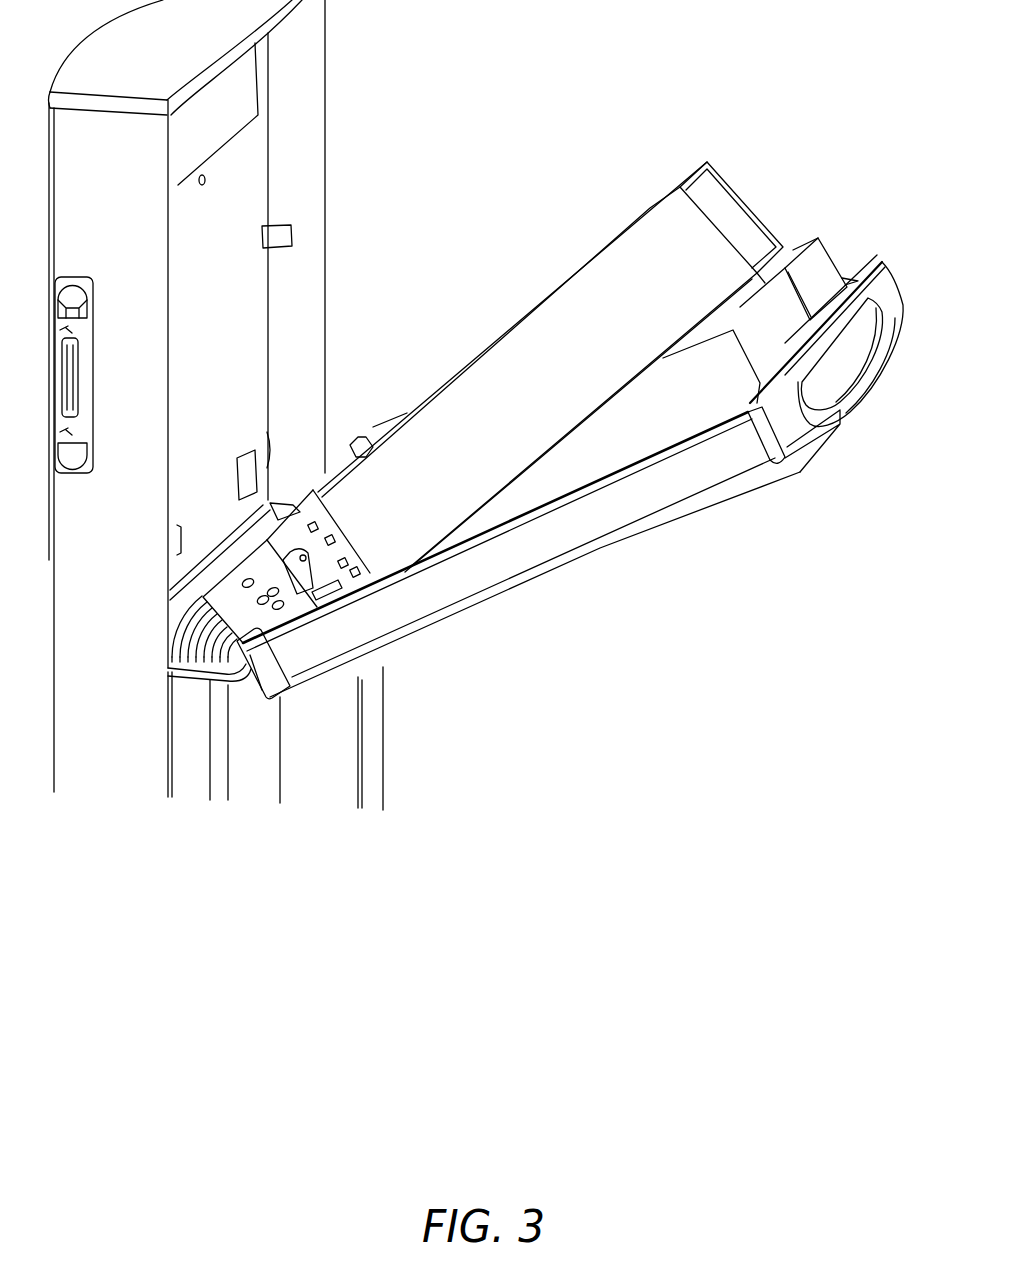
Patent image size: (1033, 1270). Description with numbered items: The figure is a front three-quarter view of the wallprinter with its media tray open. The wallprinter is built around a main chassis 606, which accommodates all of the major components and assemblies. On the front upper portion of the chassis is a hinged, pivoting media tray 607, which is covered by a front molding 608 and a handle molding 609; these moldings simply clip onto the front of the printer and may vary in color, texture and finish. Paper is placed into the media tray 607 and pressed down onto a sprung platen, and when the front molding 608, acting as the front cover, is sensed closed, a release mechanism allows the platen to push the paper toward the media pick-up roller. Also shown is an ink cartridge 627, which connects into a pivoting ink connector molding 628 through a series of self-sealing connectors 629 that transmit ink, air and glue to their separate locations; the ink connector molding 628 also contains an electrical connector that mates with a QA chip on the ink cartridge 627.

The main chassis 606 is at (308, 190).
The ink cartridge 627 is at (612, 282).
The media tray 607 is at (818, 268).
The self-sealing connectors 629 is at (340, 518).
The handle molding 609 is at (850, 420).
The front molding 608 is at (615, 515).
The ink connector molding 628 is at (272, 657).